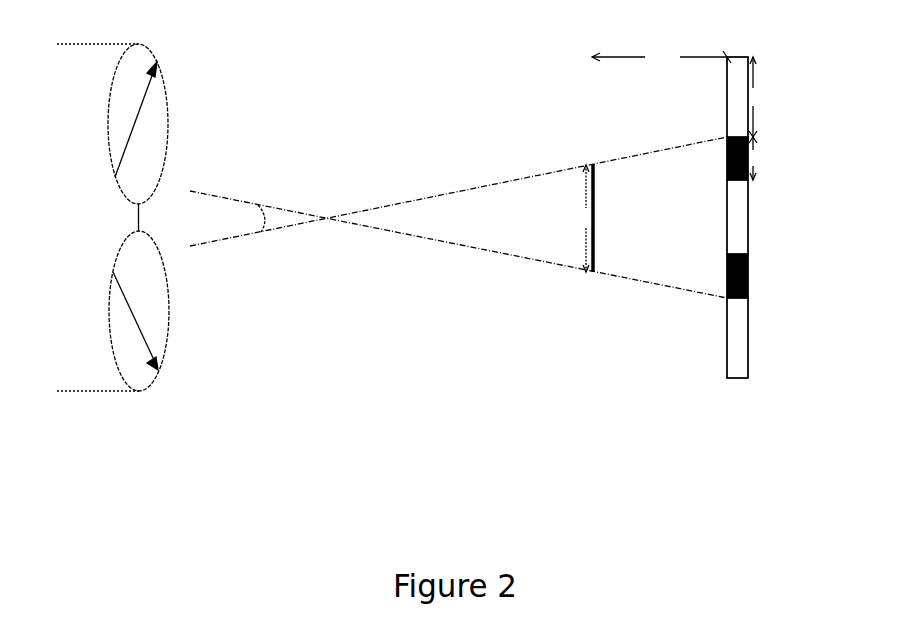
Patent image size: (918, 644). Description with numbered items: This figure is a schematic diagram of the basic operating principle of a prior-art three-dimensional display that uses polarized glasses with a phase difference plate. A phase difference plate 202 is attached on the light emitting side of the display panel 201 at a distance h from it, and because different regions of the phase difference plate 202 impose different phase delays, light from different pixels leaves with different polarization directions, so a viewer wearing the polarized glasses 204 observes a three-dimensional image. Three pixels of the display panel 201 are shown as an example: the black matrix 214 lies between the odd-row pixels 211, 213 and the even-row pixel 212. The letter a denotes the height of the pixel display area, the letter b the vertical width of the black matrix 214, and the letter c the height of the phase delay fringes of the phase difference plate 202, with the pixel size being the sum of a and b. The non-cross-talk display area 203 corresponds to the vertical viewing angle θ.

The display panel 201 is at (697, 191).
The phase difference plate 202 is at (592, 202).
The non-cross-talk display area 203 is at (223, 222).
The polarized glasses 204 is at (141, 424).
The odd-row pixel 211 is at (738, 72).
The even-row pixel 212 is at (738, 213).
The odd-row pixel 213 is at (738, 350).
The black matrix 214 is at (748, 148).